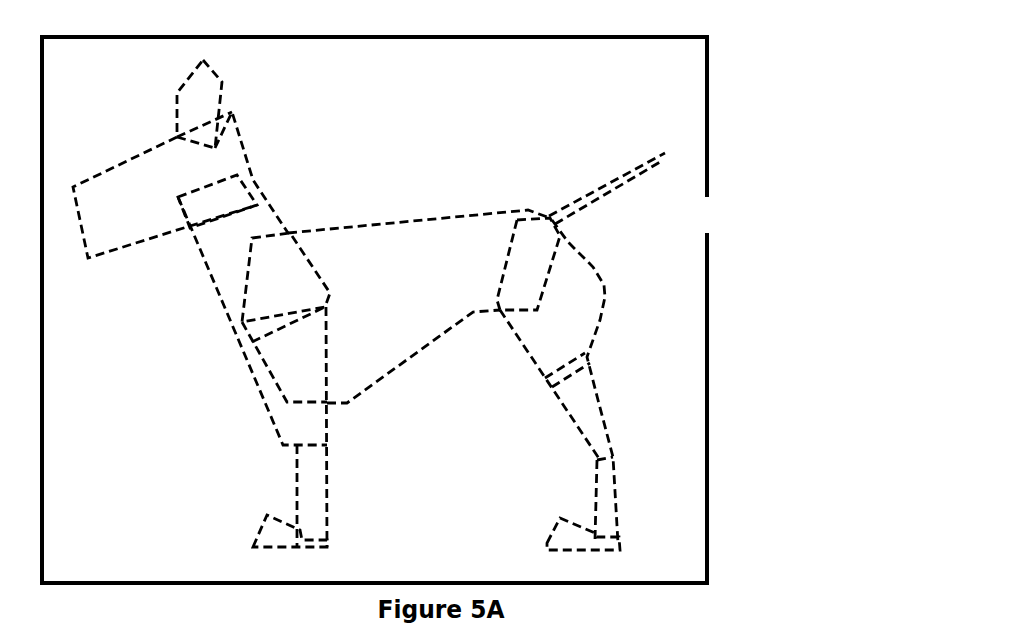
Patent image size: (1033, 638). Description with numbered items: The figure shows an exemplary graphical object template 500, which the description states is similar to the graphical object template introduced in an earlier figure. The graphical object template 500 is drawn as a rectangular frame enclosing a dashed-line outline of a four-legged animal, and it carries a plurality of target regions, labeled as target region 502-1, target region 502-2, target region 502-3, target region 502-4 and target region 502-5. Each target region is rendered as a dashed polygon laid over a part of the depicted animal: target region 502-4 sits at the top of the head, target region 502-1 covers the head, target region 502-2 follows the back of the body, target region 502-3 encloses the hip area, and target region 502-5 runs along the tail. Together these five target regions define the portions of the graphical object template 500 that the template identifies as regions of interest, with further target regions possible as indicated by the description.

The graphical object template 500 is at (733, 71).
The target region 502-1 is at (240, 140).
The target region 502-2 is at (457, 215).
The target region 502-3 is at (593, 267).
The target region 502-4 is at (222, 82).
The target region 502-5 is at (643, 163).